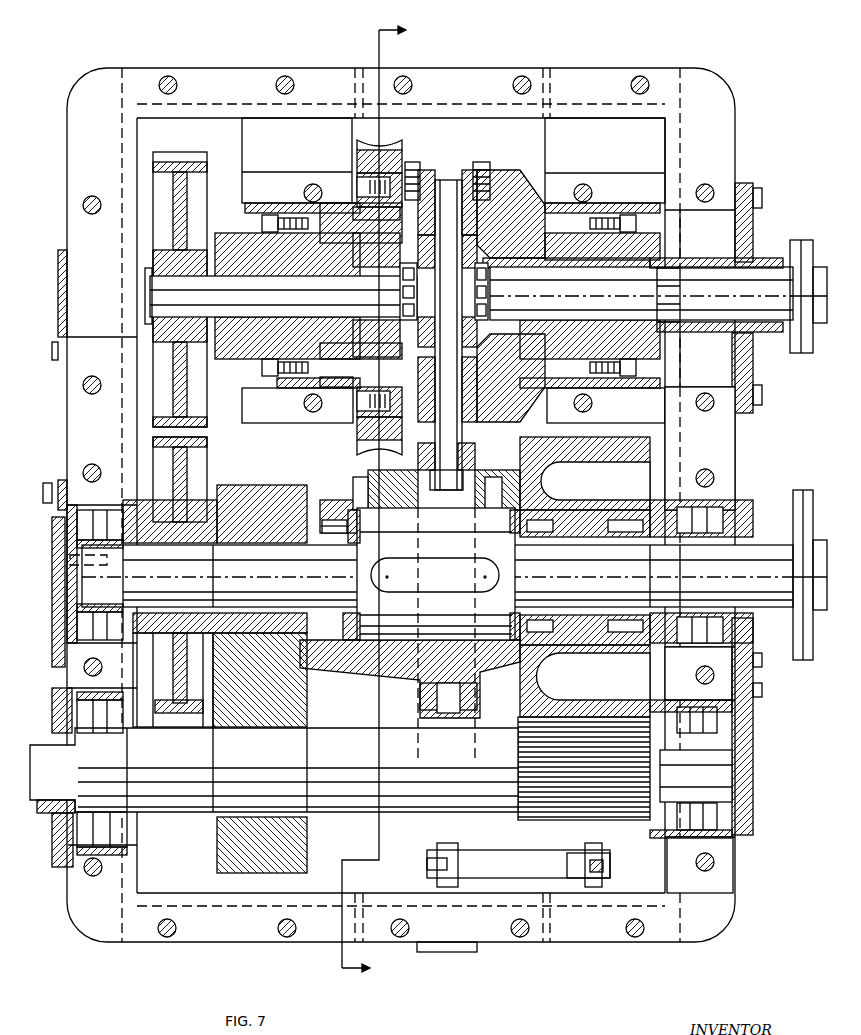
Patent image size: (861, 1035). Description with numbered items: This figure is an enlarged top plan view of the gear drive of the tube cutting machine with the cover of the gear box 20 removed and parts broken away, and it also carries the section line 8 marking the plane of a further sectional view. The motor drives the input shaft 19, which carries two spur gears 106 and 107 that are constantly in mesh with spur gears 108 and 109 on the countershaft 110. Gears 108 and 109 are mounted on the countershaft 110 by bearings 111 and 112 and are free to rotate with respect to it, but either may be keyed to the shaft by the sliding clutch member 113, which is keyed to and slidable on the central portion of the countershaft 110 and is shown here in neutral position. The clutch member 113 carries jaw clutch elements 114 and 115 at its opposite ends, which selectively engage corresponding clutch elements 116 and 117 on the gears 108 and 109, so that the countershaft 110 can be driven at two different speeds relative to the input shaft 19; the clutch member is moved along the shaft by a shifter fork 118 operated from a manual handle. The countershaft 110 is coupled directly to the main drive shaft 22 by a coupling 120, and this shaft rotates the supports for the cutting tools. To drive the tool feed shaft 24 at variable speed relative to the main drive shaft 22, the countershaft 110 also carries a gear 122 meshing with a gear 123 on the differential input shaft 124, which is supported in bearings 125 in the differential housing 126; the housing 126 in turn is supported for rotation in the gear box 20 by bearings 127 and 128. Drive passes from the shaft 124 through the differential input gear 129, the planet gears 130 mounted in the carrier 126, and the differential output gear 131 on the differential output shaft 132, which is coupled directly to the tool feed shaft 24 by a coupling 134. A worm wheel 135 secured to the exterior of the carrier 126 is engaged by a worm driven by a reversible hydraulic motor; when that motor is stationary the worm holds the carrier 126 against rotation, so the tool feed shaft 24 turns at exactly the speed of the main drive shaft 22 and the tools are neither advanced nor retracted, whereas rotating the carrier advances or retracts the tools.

The section line 8- 8 is at (381, 504).
The input shaft 19 is at (50, 777).
The gear box 20 is at (197, 947).
The main drive shaft 22 is at (820, 550).
The tool feed shaft 24 is at (800, 262).
The spur gear 106 is at (222, 851).
The spur gear 107 is at (523, 812).
The spur gear 108 is at (255, 492).
The spur gear 109 is at (533, 453).
The countershaft 110 is at (723, 497).
The bearing 111 is at (322, 540).
The bearing 112 is at (547, 531).
The sliding clutch member 113 is at (420, 500).
The jaw clutch element 114 is at (380, 508).
The jaw clutch element 115 is at (493, 508).
The clutch element 116 is at (368, 484).
The clutch element 117 is at (513, 481).
The shifter fork 118 is at (468, 700).
The coupling 120 is at (798, 655).
The gear 122 is at (198, 460).
The gear 123 is at (193, 400).
The differential input shaft 124 is at (157, 287).
The bearings 125 is at (322, 265).
The differential housing 126 is at (500, 192).
The bearing 127 is at (289, 384).
The bearing 128 is at (545, 398).
The differential input gear 129 is at (390, 275).
The planet gears 130 is at (496, 235).
The differential output gear 131 is at (494, 318).
The differential output shaft 132 is at (722, 262).
The coupling 134 is at (797, 250).
The worm wheel 135 is at (403, 150).